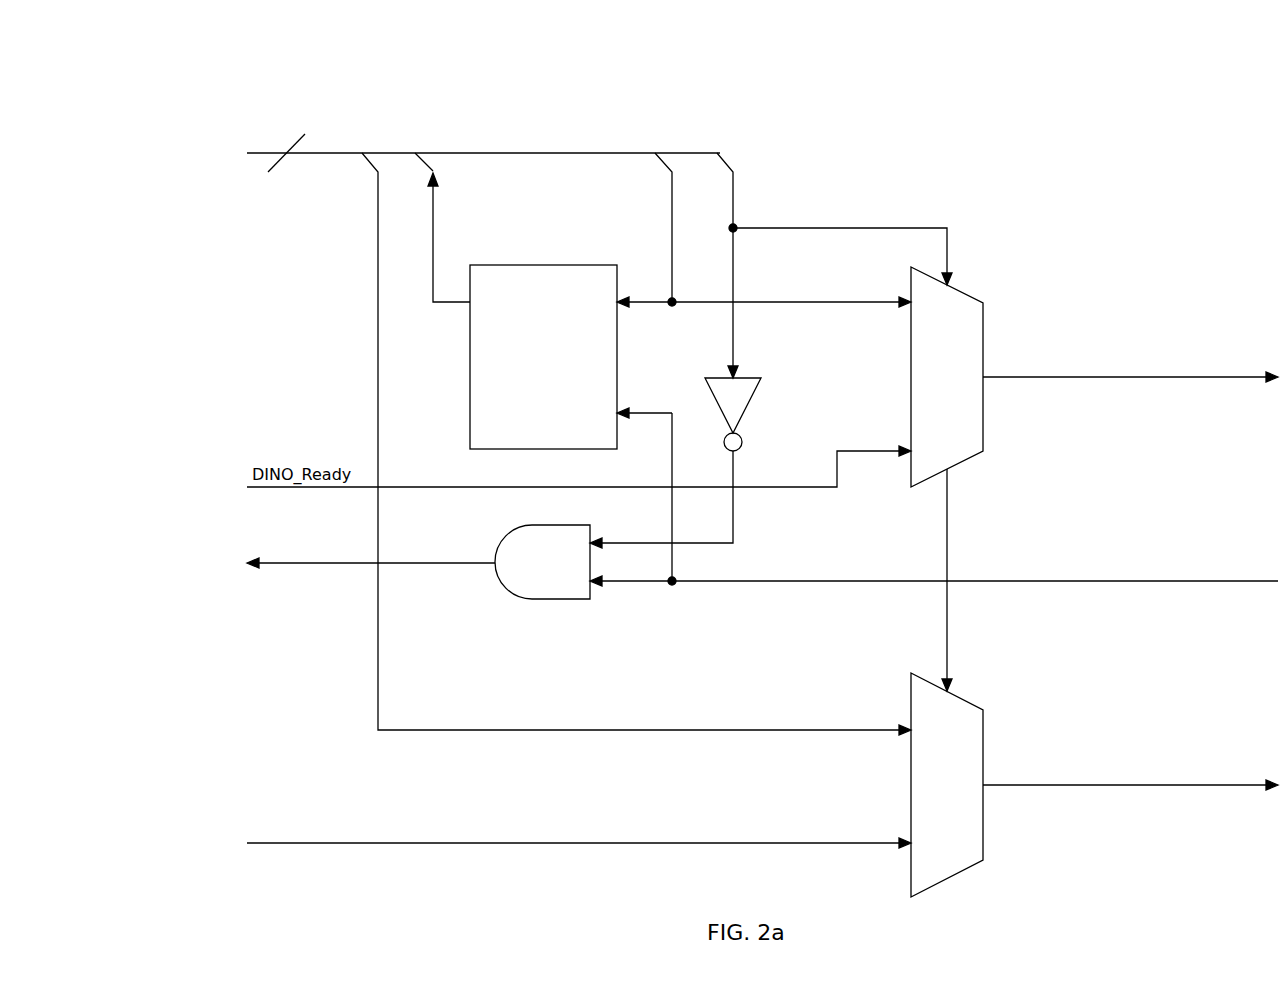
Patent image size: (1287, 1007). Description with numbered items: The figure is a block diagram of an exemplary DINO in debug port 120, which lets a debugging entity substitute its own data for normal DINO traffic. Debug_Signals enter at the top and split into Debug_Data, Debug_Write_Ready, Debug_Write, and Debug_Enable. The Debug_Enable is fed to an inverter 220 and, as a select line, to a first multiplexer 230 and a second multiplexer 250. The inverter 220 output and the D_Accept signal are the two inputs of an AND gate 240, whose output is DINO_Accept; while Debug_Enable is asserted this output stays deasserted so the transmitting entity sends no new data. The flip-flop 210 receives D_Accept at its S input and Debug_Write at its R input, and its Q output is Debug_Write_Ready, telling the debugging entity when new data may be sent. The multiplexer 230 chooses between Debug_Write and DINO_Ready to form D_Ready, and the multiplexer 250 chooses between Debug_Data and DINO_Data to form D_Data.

The DINO in debug port 120 is at (141, 100).
The flip-flop 210 is at (471, 375).
The inverter 220 is at (749, 409).
The multiplexer 230 is at (986, 288).
The AND gate 240 is at (538, 600).
The multiplexer 250 is at (980, 696).